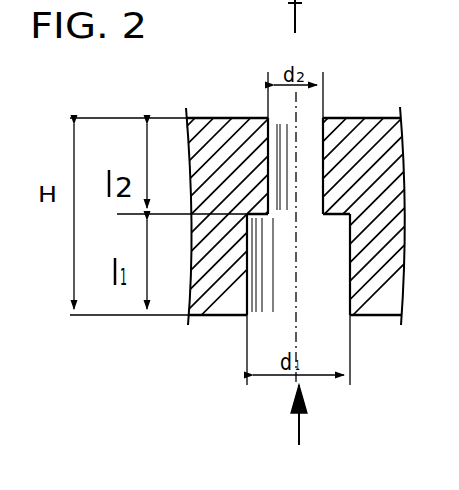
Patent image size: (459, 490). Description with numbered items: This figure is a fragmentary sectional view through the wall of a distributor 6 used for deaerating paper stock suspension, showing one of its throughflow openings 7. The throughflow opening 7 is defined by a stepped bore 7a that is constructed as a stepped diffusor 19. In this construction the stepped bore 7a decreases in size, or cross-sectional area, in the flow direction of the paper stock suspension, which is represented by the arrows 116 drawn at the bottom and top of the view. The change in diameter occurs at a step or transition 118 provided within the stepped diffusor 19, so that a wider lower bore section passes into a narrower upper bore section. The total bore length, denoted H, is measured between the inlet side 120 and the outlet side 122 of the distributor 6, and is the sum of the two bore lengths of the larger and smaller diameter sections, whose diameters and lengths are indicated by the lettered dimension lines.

The distributor 6 is at (370, 165).
The throughflow opening 7 is at (329, 257).
The stepped bore 7a is at (252, 285).
The stepped diffusor 19 is at (310, 272).
The flow direction arrows 116 is at (297, 18).
The step or transition 118 is at (252, 213).
The inlet side 120 is at (372, 318).
The outlet side 122 is at (356, 118).